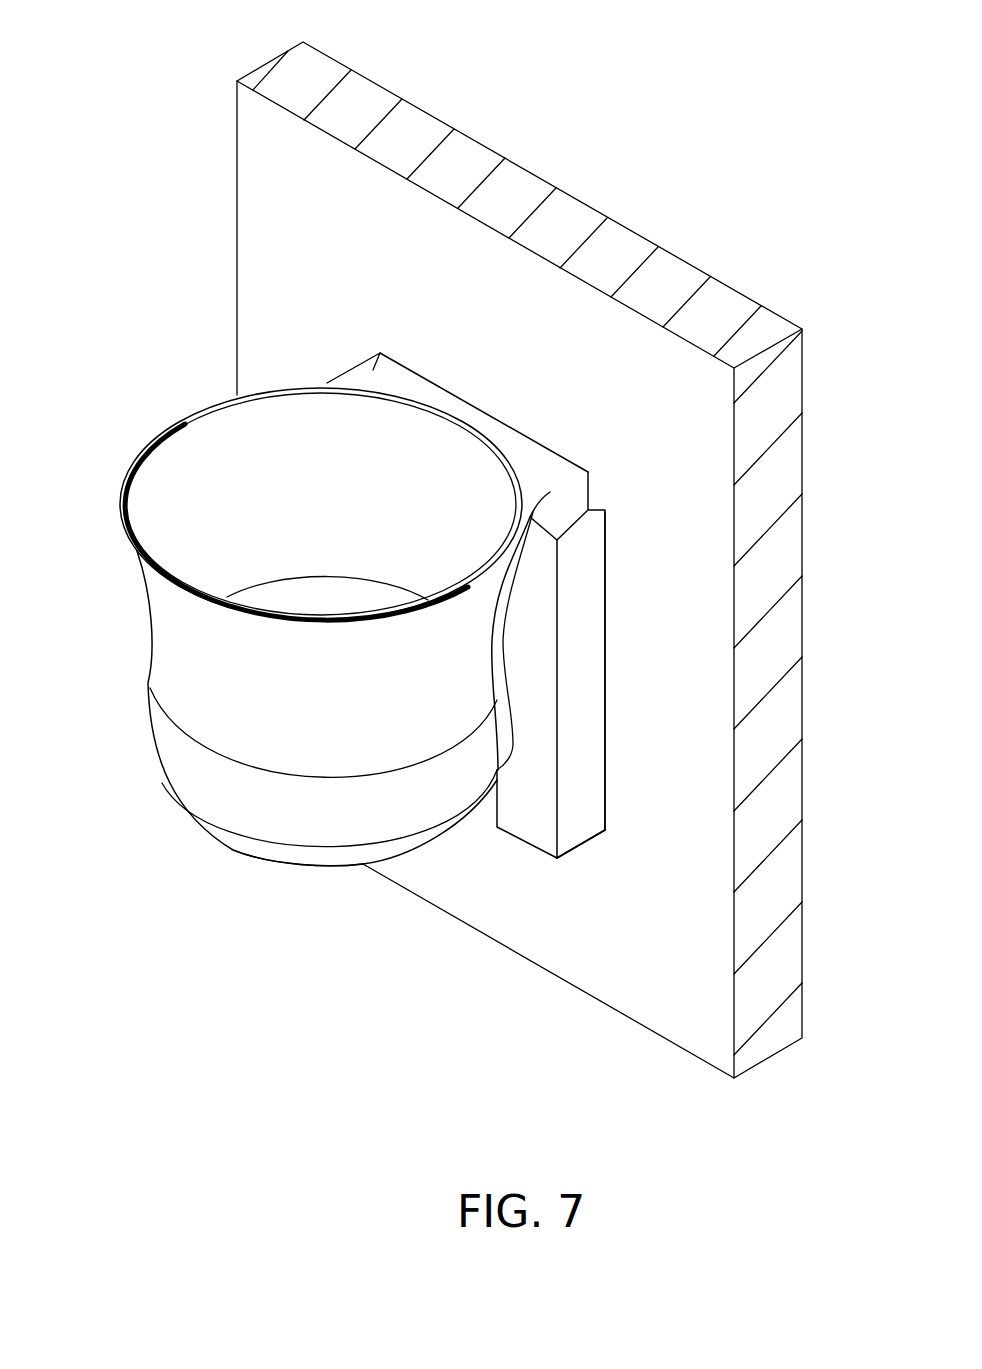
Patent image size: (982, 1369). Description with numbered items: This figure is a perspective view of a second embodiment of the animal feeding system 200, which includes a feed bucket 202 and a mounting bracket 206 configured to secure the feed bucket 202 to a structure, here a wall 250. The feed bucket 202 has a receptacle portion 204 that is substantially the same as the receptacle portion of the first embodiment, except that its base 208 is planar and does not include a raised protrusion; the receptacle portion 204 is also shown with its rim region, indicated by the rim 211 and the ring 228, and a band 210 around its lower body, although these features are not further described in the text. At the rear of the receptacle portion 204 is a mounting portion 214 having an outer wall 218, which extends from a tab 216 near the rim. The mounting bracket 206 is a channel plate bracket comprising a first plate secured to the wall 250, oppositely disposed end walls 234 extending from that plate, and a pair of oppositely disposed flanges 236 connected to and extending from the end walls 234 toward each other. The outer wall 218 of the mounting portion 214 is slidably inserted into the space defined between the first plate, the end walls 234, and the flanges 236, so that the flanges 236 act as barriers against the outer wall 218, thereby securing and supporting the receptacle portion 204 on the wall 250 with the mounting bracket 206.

The animal feeding system 200 is at (122, 279).
The feed bucket 202 is at (180, 813).
The receptacle portion 204 is at (147, 693).
The mounting bracket 206 is at (582, 844).
The base 208 is at (310, 866).
The lower band 210 is at (193, 698).
The rim 211 is at (227, 403).
The mounting portion 214 is at (573, 496).
The rim tab 216 is at (372, 368).
The outer wall 218 is at (467, 404).
The rim ring 228 is at (133, 462).
The end walls 234 is at (588, 618).
The flanges 236 is at (522, 825).
The wall 250 is at (808, 372).